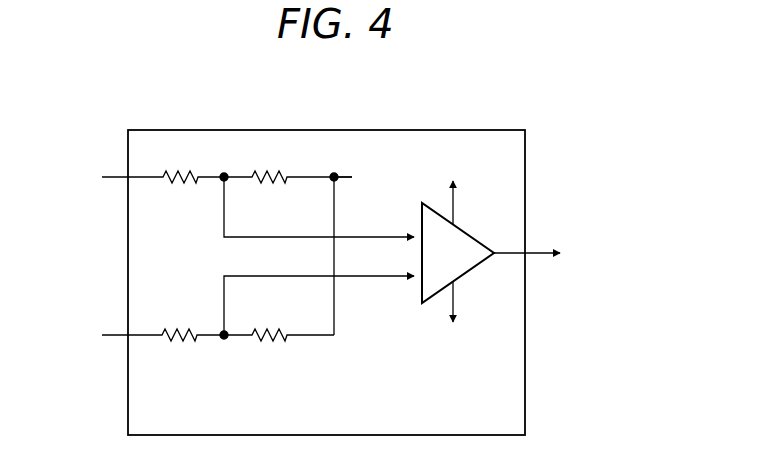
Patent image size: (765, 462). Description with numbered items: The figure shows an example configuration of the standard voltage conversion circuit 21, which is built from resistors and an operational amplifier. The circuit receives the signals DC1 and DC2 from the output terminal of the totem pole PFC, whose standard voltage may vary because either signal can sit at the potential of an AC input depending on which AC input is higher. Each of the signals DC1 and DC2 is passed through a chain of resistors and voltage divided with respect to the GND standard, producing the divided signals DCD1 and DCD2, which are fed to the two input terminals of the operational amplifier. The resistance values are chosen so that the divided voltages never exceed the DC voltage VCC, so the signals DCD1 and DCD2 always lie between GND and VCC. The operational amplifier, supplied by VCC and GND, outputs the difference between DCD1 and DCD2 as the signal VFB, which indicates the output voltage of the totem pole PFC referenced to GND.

The standard voltage conversion circuit 21 is at (181, 130).
The signal DC1 is at (198, 180).
The signal DC2 is at (189, 338).
The divided signal DCD1 is at (319, 207).
The divided signal DCD2 is at (319, 305).
The DC voltage VCC is at (452, 184).
The GND standard GND is at (372, 178).
The signal VFB is at (558, 254).